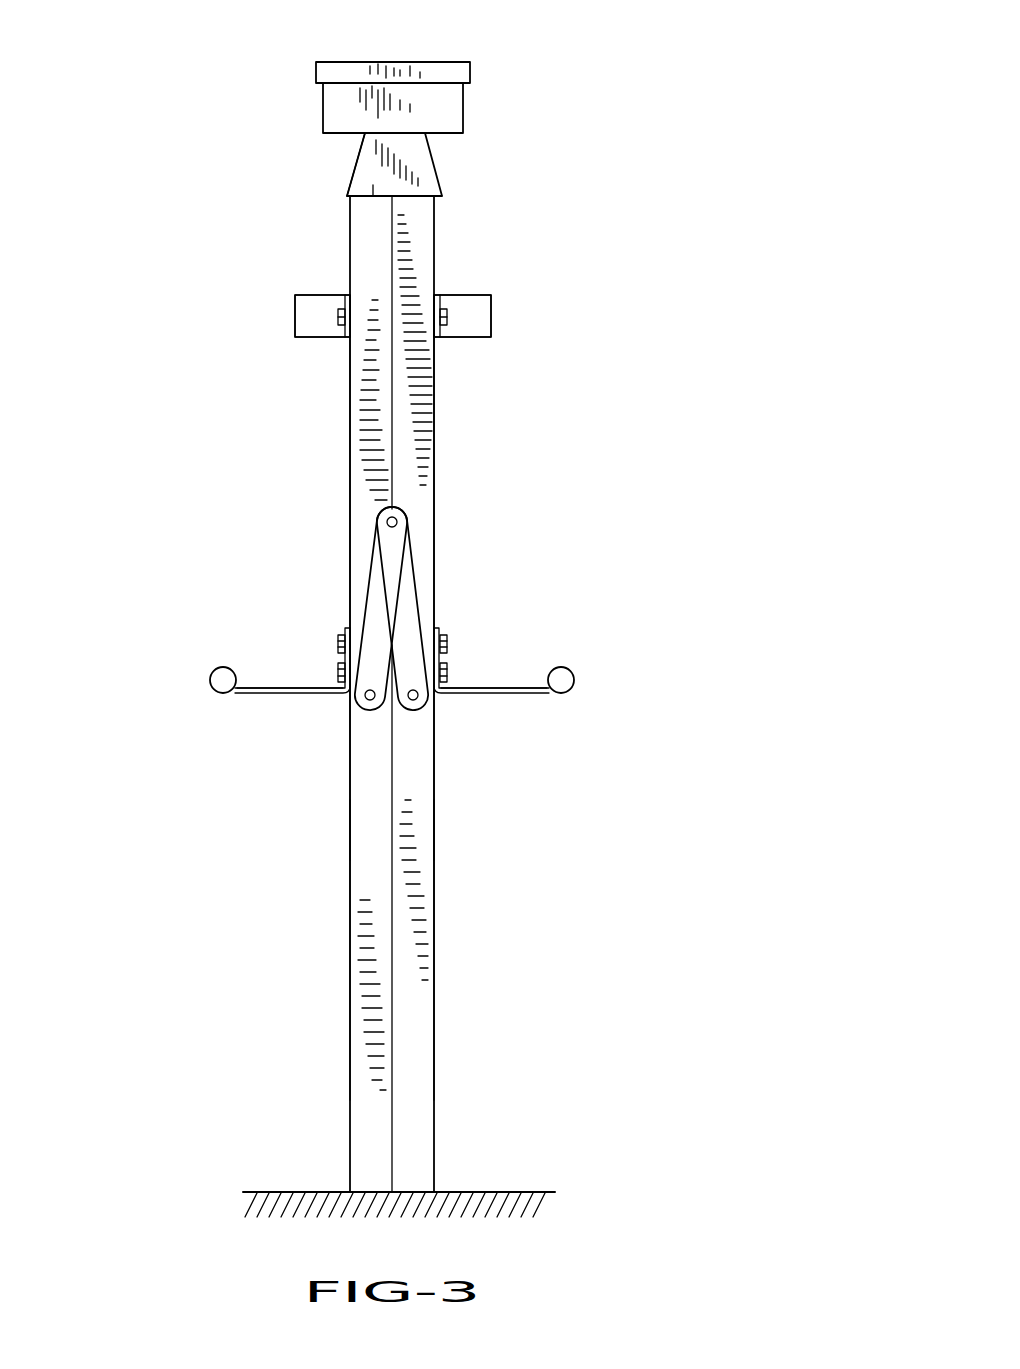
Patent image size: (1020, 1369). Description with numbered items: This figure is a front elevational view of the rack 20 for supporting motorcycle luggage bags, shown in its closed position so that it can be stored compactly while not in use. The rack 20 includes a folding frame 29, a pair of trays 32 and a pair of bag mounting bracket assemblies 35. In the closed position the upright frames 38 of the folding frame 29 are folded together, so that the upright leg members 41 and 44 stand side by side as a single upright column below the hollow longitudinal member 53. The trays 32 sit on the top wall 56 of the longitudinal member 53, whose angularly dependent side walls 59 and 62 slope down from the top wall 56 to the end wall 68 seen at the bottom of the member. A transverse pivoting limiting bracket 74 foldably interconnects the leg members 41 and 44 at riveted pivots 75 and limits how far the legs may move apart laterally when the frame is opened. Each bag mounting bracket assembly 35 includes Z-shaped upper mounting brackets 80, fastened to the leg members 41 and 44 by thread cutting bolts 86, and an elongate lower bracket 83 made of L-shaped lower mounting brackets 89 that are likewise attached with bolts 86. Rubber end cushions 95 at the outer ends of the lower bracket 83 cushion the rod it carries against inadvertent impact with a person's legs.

The rack 20 is at (577, 162).
The folding frame 29 is at (445, 243).
The trays 32 is at (430, 62).
The top wall 56 is at (392, 133).
The side wall 62 is at (434, 168).
The side wall 59 is at (356, 165).
The hollow longitudinal member 53 is at (347, 184).
The end wall 68 is at (373, 185).
The bag mounting bracket assemblies 35 is at (270, 293).
The Z-shaped upper mounting brackets 80 is at (322, 337).
The thread cutting bolt 86 is at (338, 316).
The transverse pivoting limiting brackets 74 is at (403, 570).
The riveted pivots 75 is at (370, 700).
The elongate lower bracket 83 is at (245, 707).
The L-shaped lower mounting brackets 89 is at (292, 688).
The rubber end cushions 95 is at (211, 677).
The upright frames 38 is at (350, 833).
The upright leg member 44 is at (361, 880).
The upright leg member 41 is at (428, 880).